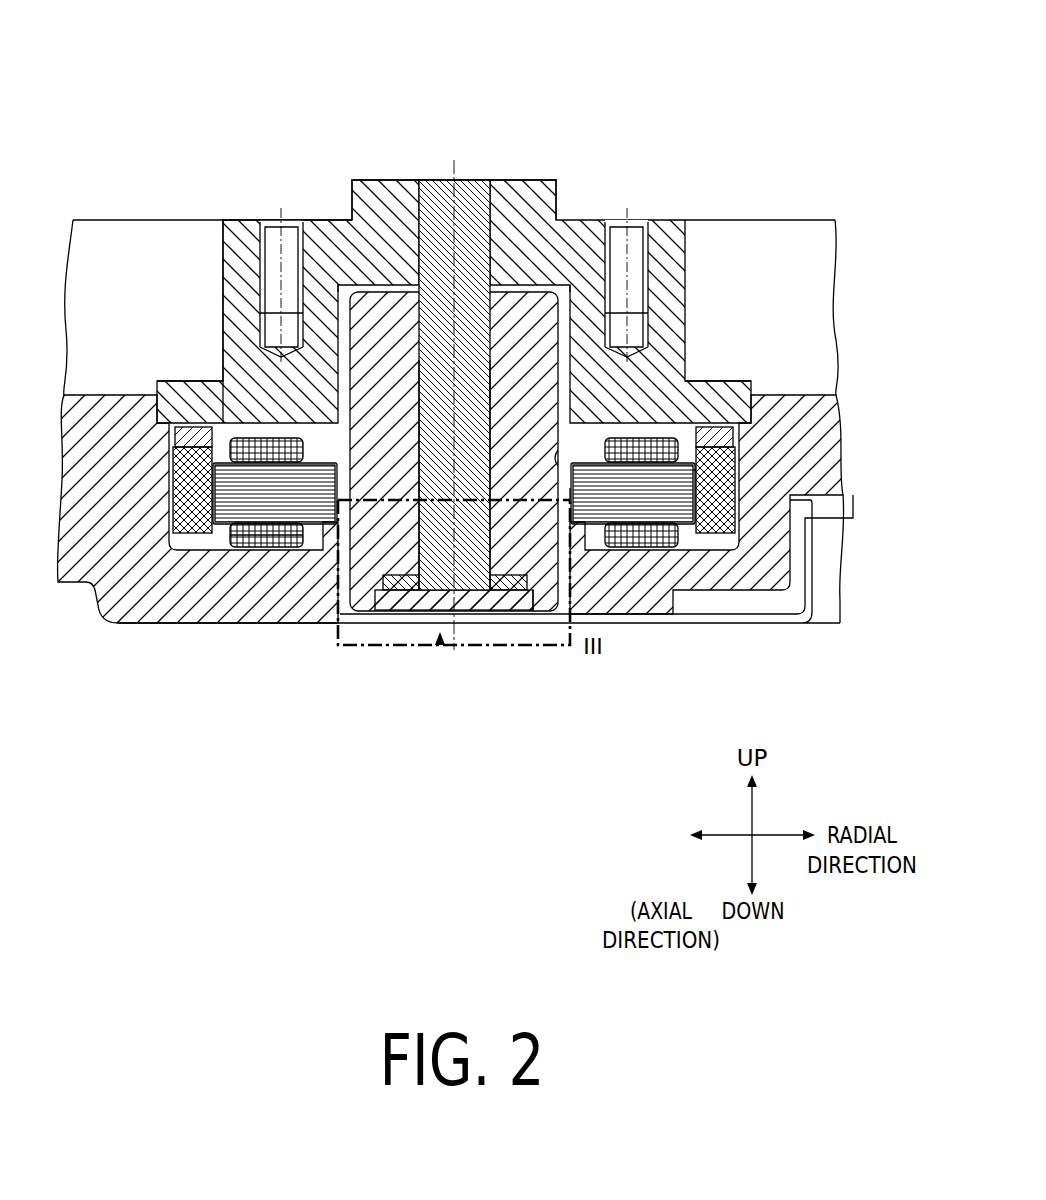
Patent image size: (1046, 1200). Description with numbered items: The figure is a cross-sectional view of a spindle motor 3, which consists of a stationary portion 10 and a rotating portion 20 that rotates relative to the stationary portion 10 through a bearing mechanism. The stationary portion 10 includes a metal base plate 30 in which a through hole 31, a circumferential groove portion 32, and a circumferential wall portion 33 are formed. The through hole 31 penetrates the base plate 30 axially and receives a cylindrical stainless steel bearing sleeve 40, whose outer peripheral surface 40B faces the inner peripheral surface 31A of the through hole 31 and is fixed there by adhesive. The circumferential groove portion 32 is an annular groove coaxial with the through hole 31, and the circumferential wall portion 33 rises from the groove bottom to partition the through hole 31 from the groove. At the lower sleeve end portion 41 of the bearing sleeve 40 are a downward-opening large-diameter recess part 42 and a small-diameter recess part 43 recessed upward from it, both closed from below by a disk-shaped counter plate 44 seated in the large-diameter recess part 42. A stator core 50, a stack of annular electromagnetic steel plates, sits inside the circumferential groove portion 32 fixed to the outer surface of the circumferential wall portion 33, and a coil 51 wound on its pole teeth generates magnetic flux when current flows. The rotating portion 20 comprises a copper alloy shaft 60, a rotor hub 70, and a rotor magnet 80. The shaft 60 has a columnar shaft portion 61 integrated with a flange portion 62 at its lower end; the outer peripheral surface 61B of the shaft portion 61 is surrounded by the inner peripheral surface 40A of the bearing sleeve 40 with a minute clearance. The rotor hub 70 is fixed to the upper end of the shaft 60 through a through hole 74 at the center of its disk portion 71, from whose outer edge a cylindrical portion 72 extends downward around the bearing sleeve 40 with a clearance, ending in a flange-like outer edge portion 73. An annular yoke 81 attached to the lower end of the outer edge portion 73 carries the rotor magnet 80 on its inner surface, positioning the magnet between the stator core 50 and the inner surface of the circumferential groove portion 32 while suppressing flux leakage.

The spindle motor 3 is at (149, 90).
The stationary portion 10 is at (270, 614).
The rotating portion 20 is at (553, 188).
The base plate 30 is at (310, 612).
The through hole 31 is at (454, 650).
The inner peripheral surface 31A is at (707, 472).
The circumferential groove portion 32 is at (232, 530).
The circumferential wall portion 33 is at (230, 476).
The bearing sleeve 40 is at (385, 600).
The inner peripheral surface 40A is at (562, 455).
The outer peripheral surface 40B is at (700, 493).
The sleeve end portion 41 is at (540, 600).
The large-diameter recess part 42 is at (525, 612).
The small-diameter recess part 43 is at (508, 592).
The counter plate 44 is at (439, 647).
The stator core 50 is at (225, 515).
The coil 51 is at (247, 537).
The shaft 60 is at (470, 220).
The shaft portion 61 is at (492, 345).
The outer peripheral surface 61B is at (494, 393).
The flange portion 62 is at (412, 597).
The rotor hub 70 is at (378, 212).
The disk portion 71 is at (330, 222).
The cylindrical portion 72 is at (230, 307).
The outer edge portion 73 is at (215, 397).
The through hole 74 is at (437, 178).
The rotor magnet 80 is at (190, 477).
The yoke 81 is at (203, 437).